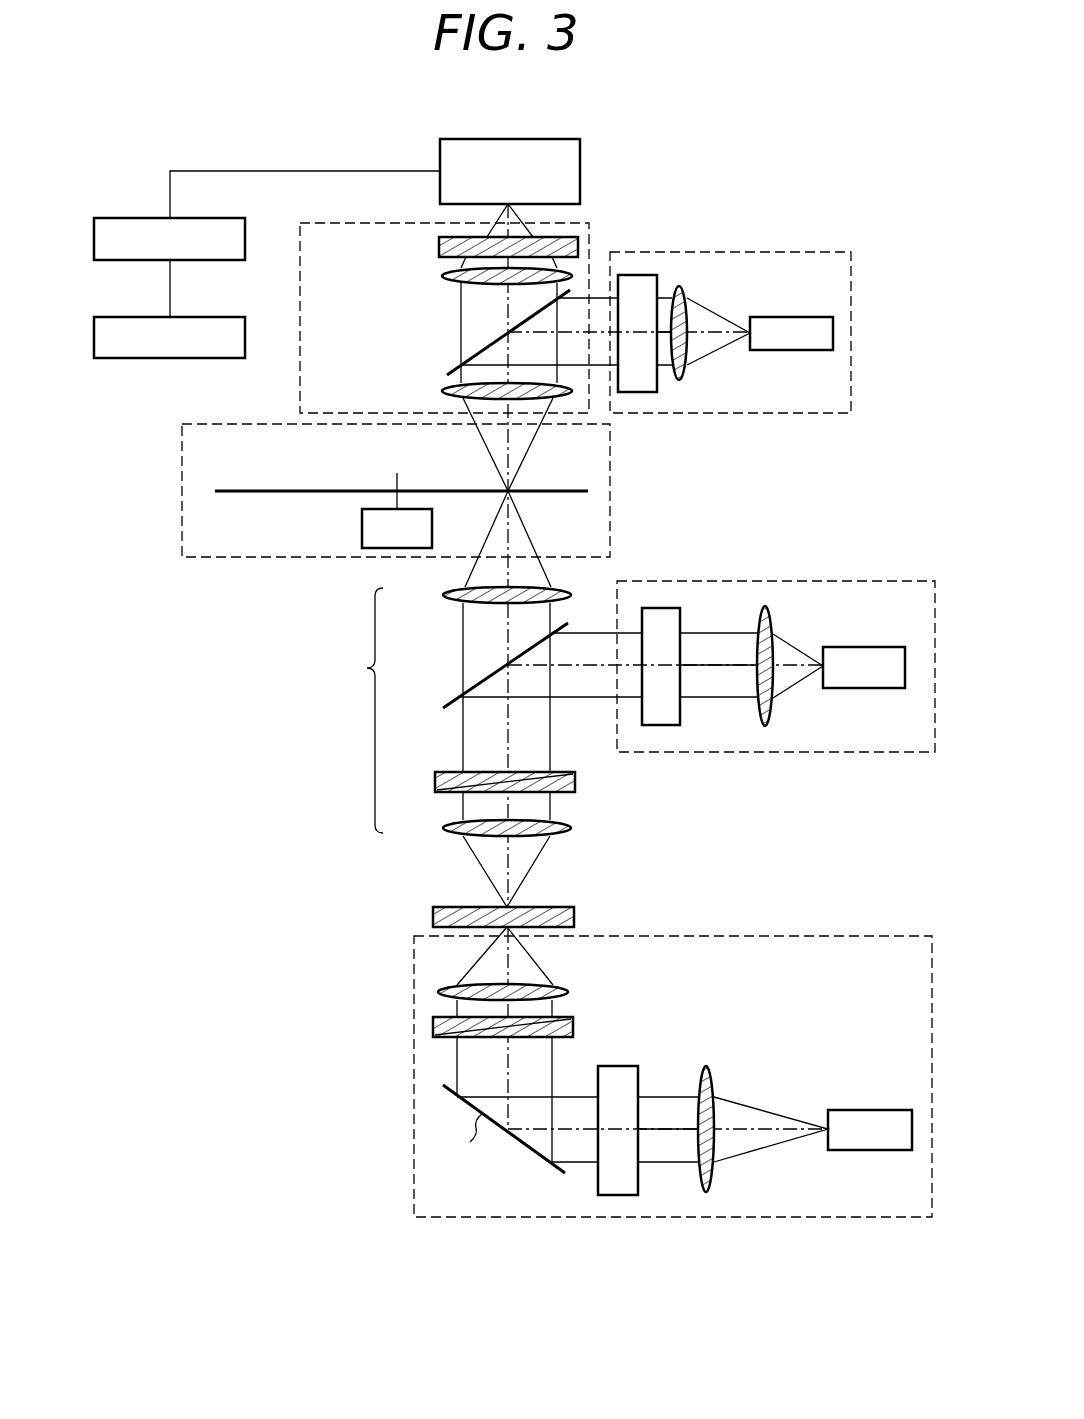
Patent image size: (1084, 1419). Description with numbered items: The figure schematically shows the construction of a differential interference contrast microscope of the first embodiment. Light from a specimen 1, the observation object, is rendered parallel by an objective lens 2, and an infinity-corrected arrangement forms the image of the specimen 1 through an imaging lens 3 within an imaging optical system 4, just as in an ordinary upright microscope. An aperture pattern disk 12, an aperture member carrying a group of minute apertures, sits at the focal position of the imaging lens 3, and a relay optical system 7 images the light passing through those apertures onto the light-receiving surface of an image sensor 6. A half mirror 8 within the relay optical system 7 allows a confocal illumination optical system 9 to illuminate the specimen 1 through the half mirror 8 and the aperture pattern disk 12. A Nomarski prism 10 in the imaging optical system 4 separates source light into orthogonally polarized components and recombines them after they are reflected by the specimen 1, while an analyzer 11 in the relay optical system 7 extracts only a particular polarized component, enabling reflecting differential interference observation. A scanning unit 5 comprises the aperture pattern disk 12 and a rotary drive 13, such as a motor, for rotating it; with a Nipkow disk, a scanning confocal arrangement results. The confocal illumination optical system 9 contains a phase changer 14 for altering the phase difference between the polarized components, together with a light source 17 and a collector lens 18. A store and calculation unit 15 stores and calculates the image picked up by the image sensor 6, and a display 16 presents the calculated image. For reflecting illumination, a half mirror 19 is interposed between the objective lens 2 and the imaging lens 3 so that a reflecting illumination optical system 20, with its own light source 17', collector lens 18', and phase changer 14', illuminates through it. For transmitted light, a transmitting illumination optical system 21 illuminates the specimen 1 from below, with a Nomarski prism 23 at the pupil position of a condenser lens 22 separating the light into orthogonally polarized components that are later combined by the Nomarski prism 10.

The specimen 1 is at (541, 908).
The objective lens 2 is at (568, 824).
The imaging lens 3 is at (446, 602).
The imaging optical system 4 is at (363, 710).
The scanning unit 5 is at (610, 470).
The image sensor 6 is at (580, 164).
The relay optical system 7 is at (589, 243).
The half mirror 8 is at (458, 368).
The confocal illumination optical system 9 is at (795, 252).
The Nomarski prism 10 is at (575, 782).
The analyzer 11 is at (439, 247).
The aperture pattern disk 12 is at (286, 490).
The rotary drive 13 is at (362, 527).
The phase changer 14 is at (663, 322).
The store and calculation unit 15 is at (190, 218).
The display 16 is at (190, 317).
The light source 17 is at (797, 313).
The collector lens 18 is at (710, 324).
The half mirror 19 is at (452, 700).
The reflecting illumination optical system 20 is at (880, 581).
The transmitting illumination optical system 21 is at (880, 936).
The condenser lens 22 is at (568, 988).
The Nomarski prism 23 is at (573, 1026).
The phase changer 14' is at (699, 656).
The collector lens 18' is at (794, 659).
The light source 17' is at (867, 647).